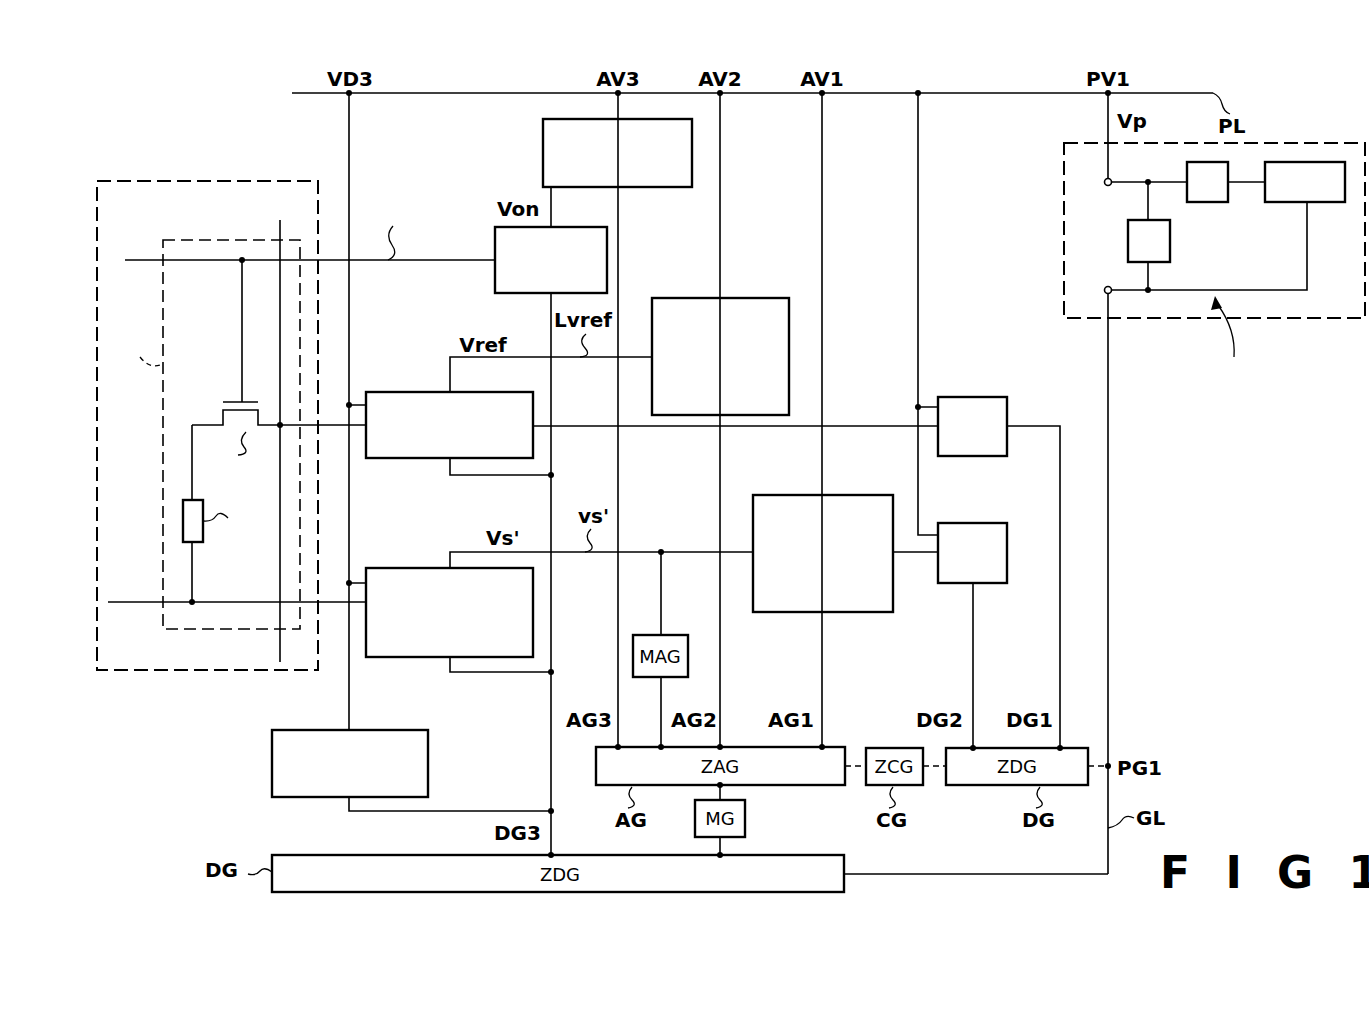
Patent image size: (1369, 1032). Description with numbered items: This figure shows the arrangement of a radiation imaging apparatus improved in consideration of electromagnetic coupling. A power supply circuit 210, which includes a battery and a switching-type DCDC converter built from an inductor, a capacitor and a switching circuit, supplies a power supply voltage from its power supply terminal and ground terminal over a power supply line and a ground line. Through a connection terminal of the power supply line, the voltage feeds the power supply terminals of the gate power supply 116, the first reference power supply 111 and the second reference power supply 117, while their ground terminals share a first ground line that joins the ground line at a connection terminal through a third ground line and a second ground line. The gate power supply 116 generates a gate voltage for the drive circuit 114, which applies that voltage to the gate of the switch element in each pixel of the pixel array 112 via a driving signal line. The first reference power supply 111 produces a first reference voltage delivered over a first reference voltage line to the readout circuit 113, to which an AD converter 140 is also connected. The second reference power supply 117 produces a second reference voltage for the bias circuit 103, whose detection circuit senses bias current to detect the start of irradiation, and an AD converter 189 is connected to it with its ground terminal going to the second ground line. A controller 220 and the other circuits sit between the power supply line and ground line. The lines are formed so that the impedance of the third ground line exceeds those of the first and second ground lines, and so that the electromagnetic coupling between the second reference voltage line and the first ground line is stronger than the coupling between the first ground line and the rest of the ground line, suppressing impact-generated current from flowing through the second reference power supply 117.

The pixel array 112 is at (177, 181).
The readout circuit 113 is at (378, 392).
The bias circuit 103 is at (378, 568).
The drive circuit 114 is at (495, 240).
The gate power supply 116 is at (543, 136).
The first reference power supply 111 is at (762, 298).
The second reference power supply 117 is at (868, 495).
The AD converter 140 is at (990, 397).
The AD converter 189 is at (990, 523).
The controller 220 is at (396, 730).
The power supply circuit 210 is at (1296, 321).